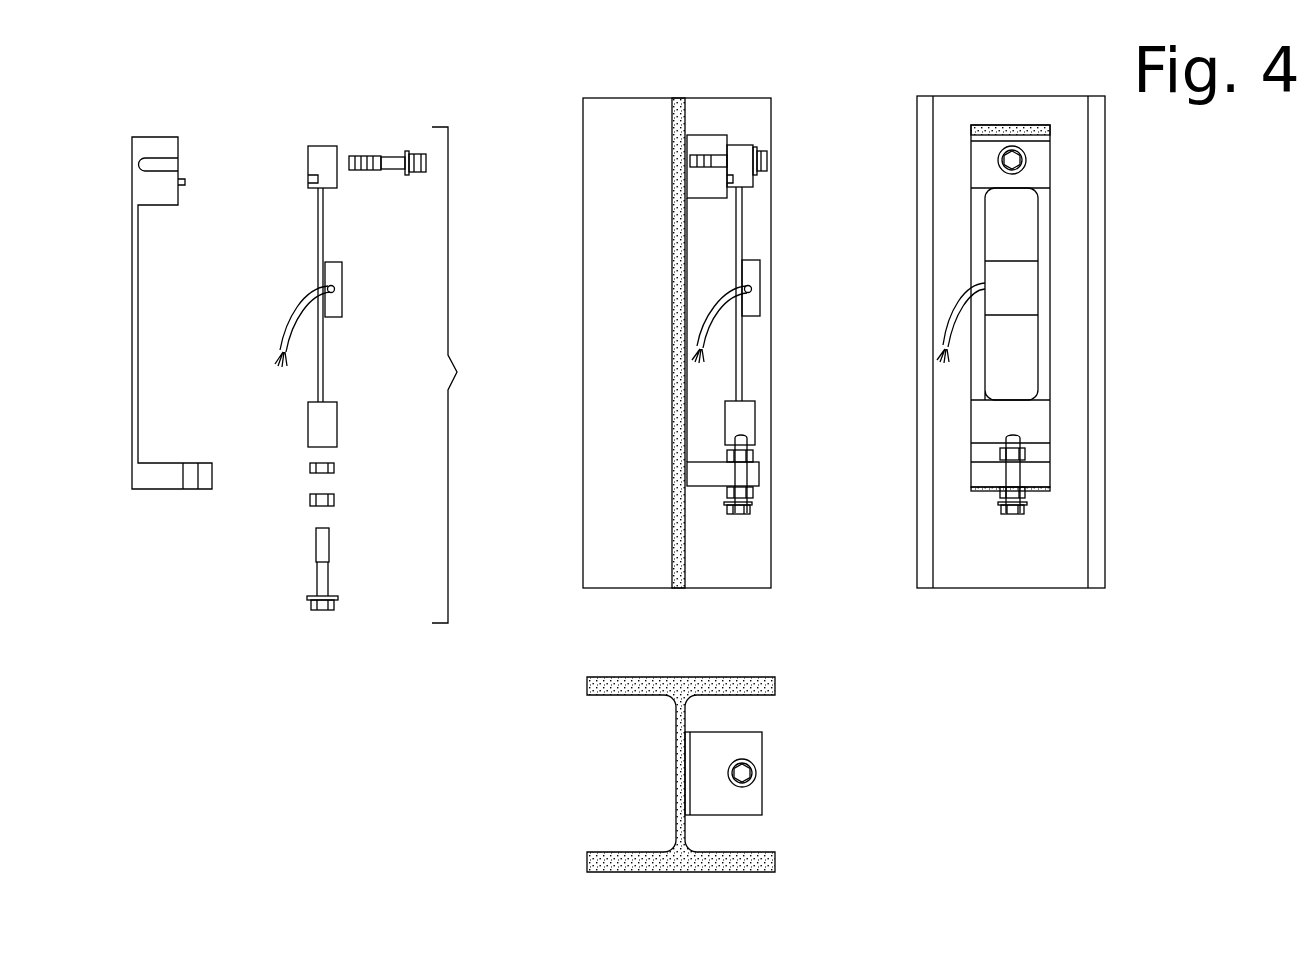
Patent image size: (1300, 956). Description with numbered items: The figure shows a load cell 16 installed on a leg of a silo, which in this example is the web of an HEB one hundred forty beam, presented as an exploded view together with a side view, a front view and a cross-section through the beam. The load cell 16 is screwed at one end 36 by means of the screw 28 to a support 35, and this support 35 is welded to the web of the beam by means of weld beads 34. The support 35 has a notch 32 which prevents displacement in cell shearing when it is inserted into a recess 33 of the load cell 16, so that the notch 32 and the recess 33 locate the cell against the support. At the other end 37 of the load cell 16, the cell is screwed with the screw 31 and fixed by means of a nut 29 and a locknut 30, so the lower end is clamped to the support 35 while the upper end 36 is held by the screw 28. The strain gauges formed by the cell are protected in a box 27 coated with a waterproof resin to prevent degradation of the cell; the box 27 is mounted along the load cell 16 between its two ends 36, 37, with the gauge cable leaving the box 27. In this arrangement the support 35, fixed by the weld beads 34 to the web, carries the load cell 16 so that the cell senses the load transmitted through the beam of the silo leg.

The load cell 16 is at (744, 212).
The box 27 is at (343, 287).
The screw 28 is at (384, 151).
The nut 29 is at (336, 468).
The locknut 30 is at (336, 502).
The screw 31 is at (330, 553).
The notch 32 is at (186, 187).
The recess 33 is at (307, 179).
The weld beads 34 is at (693, 128).
The support 35 is at (185, 160).
The one end of the load cell 36 is at (328, 142).
The other end of the load cell 37 is at (343, 422).